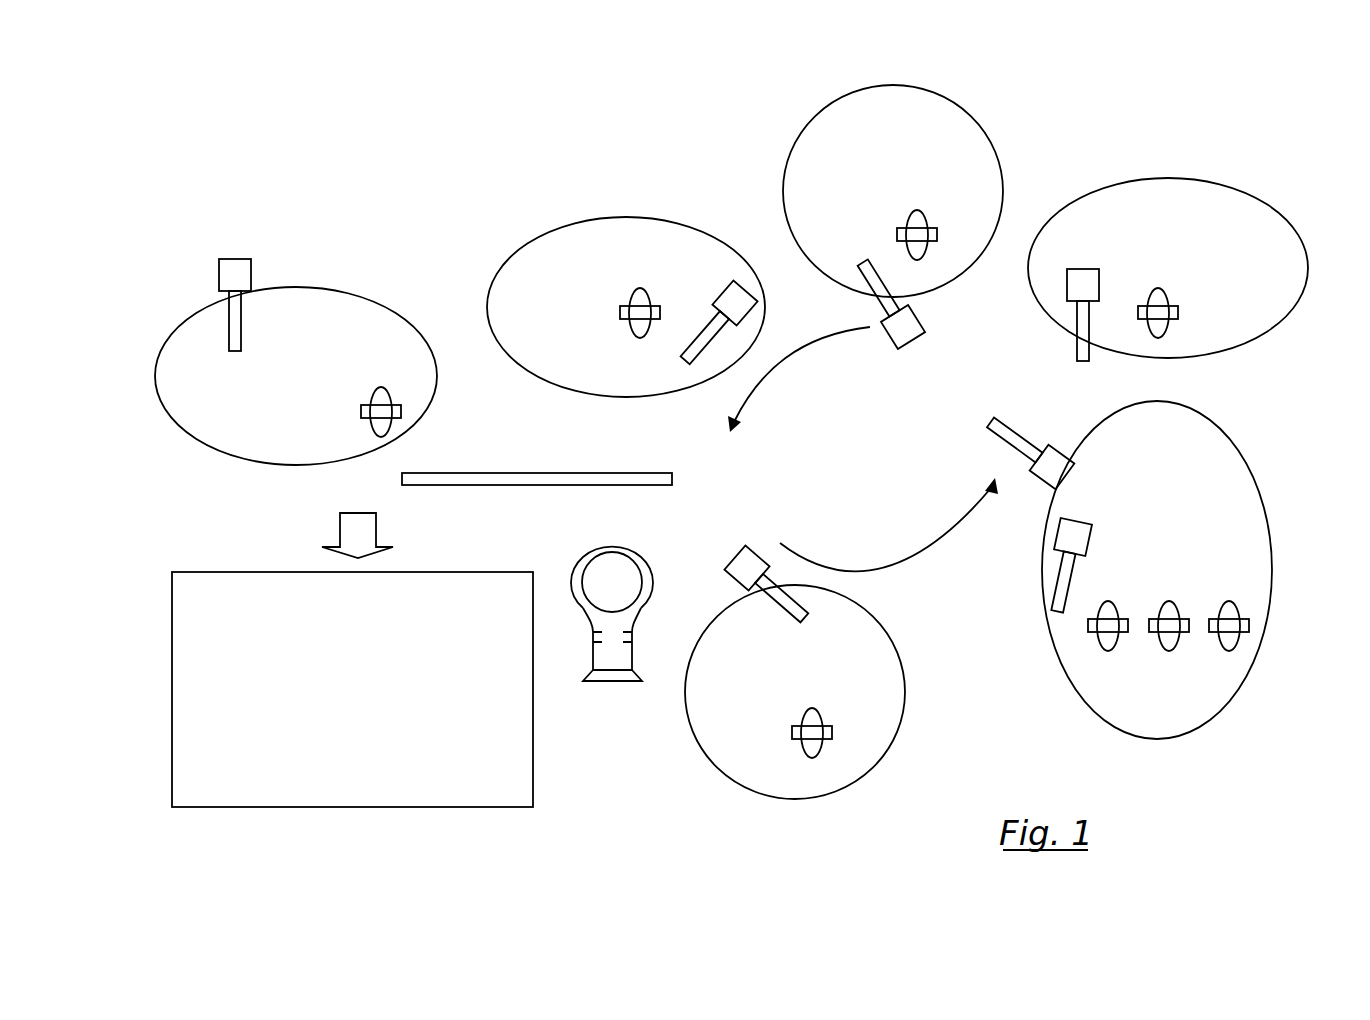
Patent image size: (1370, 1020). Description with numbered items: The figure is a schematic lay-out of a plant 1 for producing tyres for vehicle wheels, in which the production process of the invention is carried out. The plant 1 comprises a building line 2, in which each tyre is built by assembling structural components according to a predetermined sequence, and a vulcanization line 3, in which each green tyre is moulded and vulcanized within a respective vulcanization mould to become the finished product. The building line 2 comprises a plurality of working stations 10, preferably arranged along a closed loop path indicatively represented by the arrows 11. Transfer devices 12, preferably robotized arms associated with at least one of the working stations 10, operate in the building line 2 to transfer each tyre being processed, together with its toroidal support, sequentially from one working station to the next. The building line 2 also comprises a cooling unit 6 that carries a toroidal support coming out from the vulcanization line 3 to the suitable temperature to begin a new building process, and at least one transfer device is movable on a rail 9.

The plant 1 is at (342, 155).
The building line 2 is at (512, 202).
The vulcanization line 3 is at (230, 597).
The cooling unit 6 is at (625, 652).
The rail 9 is at (562, 478).
The working stations 10 is at (317, 308).
The arrows 11 is at (785, 355).
The transfer devices 12 is at (234, 270).